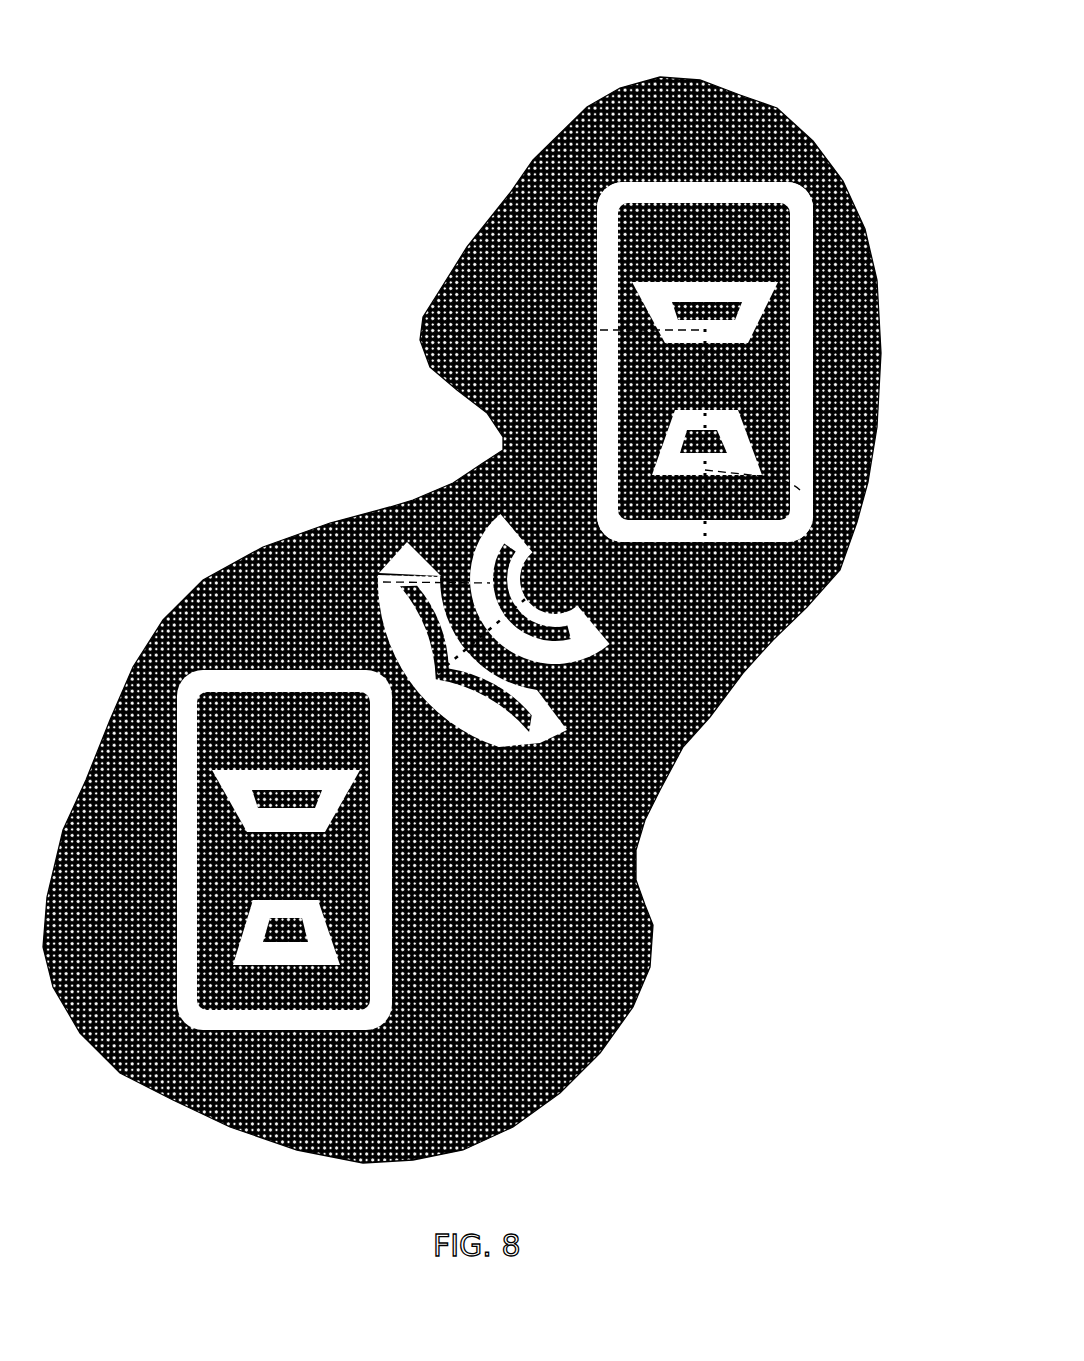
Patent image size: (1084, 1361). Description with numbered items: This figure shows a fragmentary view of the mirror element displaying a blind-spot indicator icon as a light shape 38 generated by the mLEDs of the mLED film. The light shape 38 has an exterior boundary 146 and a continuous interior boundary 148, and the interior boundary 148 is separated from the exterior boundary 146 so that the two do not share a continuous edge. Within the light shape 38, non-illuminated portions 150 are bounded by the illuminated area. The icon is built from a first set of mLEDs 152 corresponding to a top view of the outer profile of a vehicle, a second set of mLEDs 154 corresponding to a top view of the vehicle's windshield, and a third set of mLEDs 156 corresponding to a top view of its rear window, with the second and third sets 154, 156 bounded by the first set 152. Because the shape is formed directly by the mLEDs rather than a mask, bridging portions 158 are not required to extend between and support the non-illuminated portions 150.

The light shape 38 is at (445, 218).
The exterior boundary 146 is at (626, 186).
The continuous interior boundary 148 is at (618, 233).
The non-illuminated portions 150 is at (687, 303).
The first set of mLEDs 152 is at (800, 168).
The second set of mLEDs 154 is at (748, 256).
The third set of mLEDs 156 is at (714, 391).
The bridging portions 158 is at (425, 366).